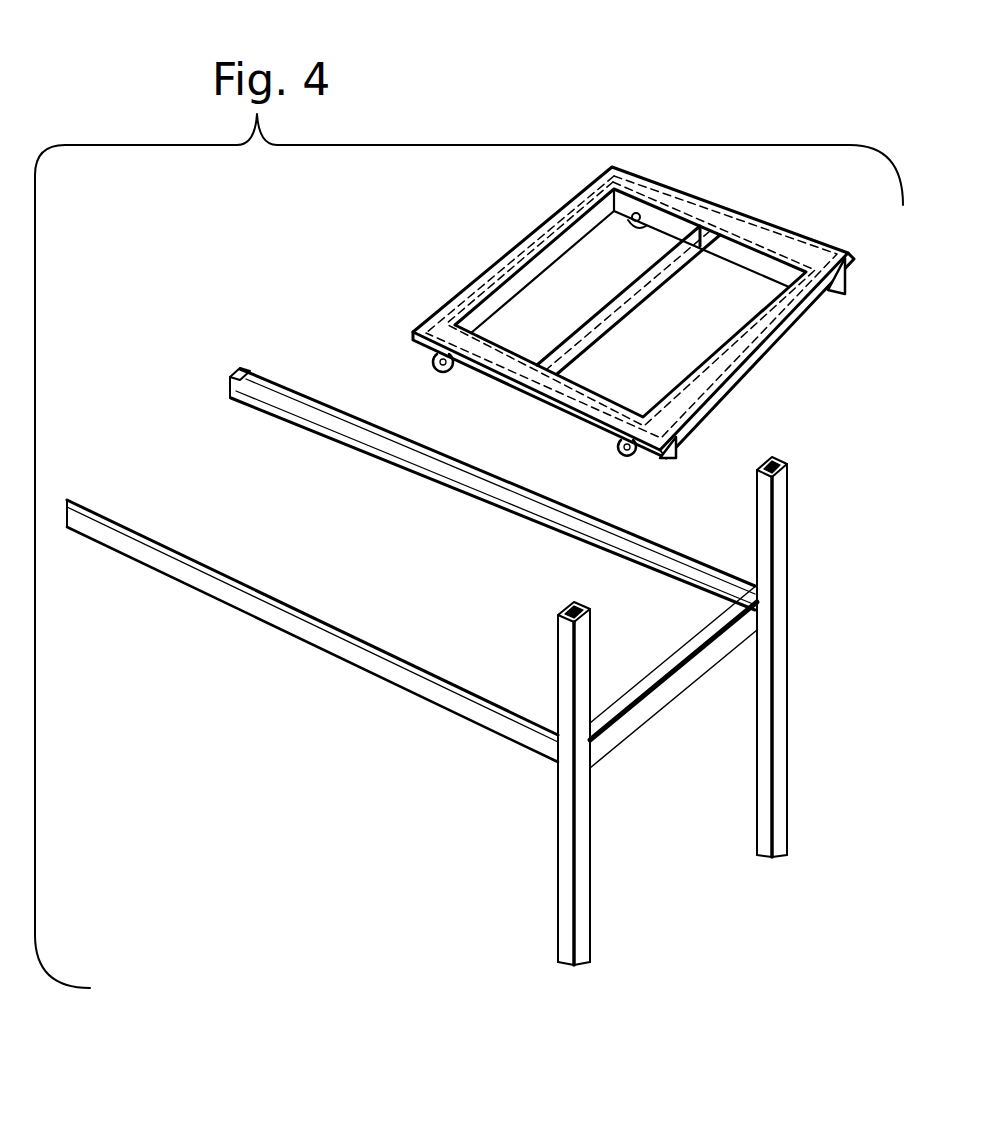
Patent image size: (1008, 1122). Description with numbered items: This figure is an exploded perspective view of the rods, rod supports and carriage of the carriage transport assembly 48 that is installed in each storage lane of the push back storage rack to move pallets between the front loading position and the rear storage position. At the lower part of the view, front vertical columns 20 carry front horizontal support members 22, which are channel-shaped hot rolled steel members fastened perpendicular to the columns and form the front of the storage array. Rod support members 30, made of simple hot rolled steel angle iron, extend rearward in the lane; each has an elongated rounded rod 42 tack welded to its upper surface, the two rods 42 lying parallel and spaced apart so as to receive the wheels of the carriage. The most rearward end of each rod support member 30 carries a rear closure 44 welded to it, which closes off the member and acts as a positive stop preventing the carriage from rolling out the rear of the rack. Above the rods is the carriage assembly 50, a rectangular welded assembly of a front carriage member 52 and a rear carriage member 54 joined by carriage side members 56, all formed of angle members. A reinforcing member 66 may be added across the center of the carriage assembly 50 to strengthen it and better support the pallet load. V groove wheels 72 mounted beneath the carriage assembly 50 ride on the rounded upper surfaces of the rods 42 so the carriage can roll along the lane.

The front vertical columns 20 is at (780, 713).
The front horizontal support members 22 is at (653, 705).
The rod support members 30 is at (411, 552).
The elongated rounded rods 42 is at (350, 447).
The rear closure 44 is at (235, 395).
The carriage transport assembly 48 is at (478, 653).
The carriage assembly 50 is at (631, 312).
The front carriage member 52 is at (766, 324).
The rear carriage member 54 is at (522, 252).
The carriage side members 56 is at (785, 240).
The reinforcing members 66 is at (678, 250).
The V groove wheels 72 is at (450, 358).